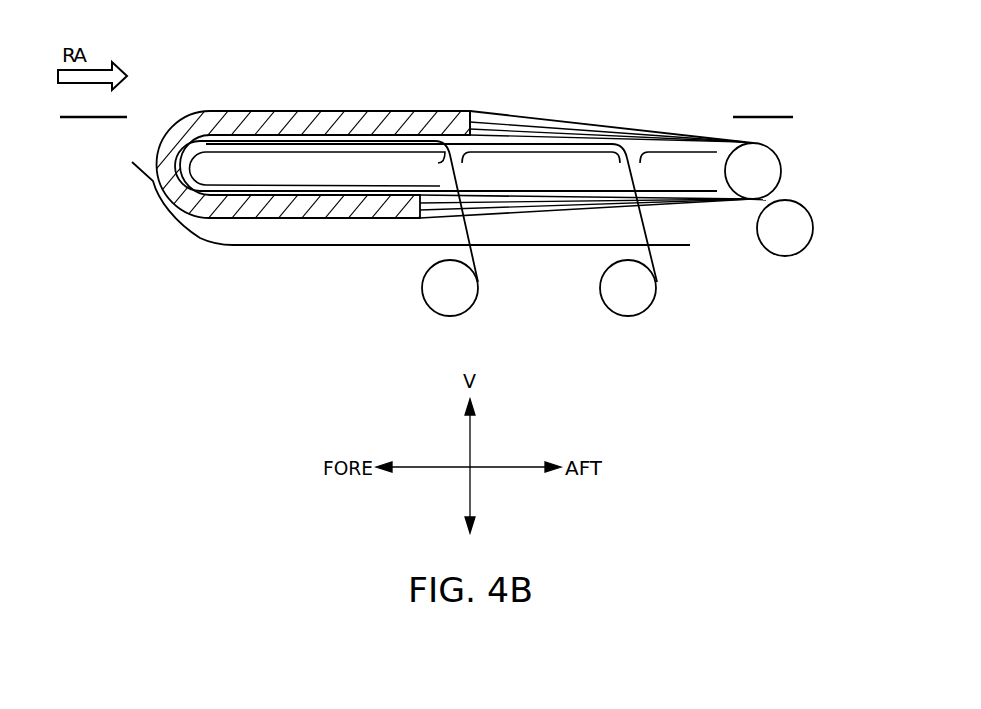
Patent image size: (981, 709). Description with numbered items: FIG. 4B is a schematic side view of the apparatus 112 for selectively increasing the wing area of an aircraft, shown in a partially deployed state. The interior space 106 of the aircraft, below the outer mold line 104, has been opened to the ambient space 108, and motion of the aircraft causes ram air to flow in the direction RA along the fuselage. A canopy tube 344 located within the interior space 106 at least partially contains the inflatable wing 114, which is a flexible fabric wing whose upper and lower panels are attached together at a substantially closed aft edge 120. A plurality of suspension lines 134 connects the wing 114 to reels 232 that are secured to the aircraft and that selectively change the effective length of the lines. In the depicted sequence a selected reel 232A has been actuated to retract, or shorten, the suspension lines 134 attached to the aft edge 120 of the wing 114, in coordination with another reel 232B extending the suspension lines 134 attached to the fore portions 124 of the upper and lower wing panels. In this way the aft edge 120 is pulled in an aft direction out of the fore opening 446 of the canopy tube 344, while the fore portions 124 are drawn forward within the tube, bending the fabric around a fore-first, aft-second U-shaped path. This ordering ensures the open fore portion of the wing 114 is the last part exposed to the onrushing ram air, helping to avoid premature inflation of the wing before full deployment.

The outer mold line 104 is at (763, 116).
The interior space 106 is at (865, 295).
The ambient space 108 is at (838, 52).
The apparatus 112 is at (632, 73).
The inflatable wing 114 is at (372, 112).
The aft edge 120 is at (470, 111).
The fore portion of upper wing panel 124 is at (461, 283).
The suspension lines 134 is at (564, 116).
The reels 232 is at (425, 305).
The selected reel 232A is at (782, 170).
The another reel 232B is at (813, 228).
The canopy tube 344 is at (461, 283).
The fore opening 446 is at (141, 189).